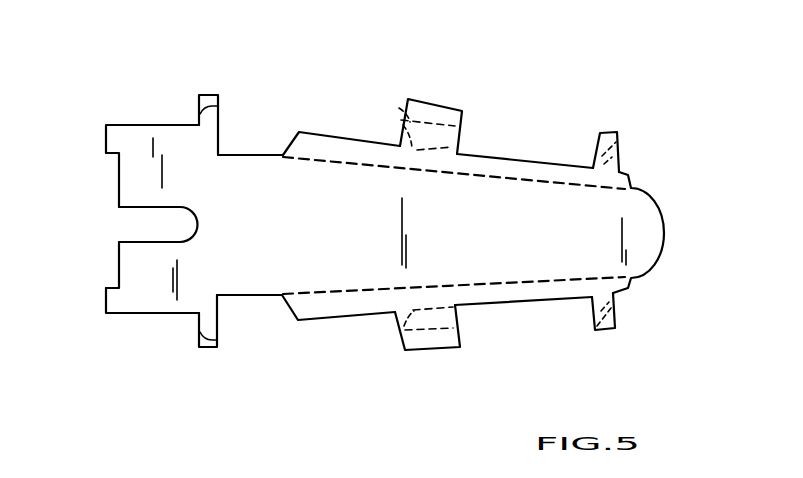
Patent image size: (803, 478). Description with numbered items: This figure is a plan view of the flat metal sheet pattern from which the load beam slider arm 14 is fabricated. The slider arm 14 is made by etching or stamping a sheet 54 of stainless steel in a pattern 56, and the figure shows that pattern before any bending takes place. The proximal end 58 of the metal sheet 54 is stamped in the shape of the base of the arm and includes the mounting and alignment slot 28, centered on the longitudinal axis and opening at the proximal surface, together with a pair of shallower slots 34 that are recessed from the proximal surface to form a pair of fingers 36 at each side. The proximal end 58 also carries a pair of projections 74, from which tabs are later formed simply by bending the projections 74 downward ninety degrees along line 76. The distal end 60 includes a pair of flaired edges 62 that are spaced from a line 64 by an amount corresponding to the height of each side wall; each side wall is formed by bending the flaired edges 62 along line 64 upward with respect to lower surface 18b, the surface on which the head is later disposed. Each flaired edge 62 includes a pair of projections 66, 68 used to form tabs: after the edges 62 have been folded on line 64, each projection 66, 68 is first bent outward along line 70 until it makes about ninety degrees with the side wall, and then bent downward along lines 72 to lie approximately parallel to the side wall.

The load beam slider arm 14 is at (311, 74).
The lower surface of distal end 18b is at (458, 227).
The mounting and alignment slot 28 is at (134, 223).
The shallower slots 34 is at (118, 170).
The fingers 36 is at (106, 140).
The sheet 54 is at (378, 231).
The pattern 56 is at (514, 89).
The proximal end of metal sheet 58 is at (128, 93).
The distal end 60 is at (547, 129).
The flaired edges 62 is at (481, 157).
The line 64 is at (353, 166).
The projections 66 is at (618, 130).
The projections 68 is at (438, 102).
The line 70 is at (402, 124).
The lines 72 is at (399, 108).
The projections 74 is at (208, 93).
The line 76 is at (198, 121).